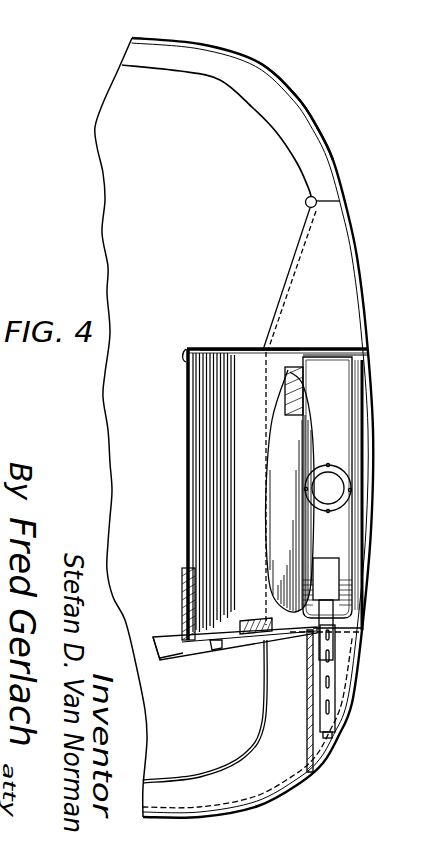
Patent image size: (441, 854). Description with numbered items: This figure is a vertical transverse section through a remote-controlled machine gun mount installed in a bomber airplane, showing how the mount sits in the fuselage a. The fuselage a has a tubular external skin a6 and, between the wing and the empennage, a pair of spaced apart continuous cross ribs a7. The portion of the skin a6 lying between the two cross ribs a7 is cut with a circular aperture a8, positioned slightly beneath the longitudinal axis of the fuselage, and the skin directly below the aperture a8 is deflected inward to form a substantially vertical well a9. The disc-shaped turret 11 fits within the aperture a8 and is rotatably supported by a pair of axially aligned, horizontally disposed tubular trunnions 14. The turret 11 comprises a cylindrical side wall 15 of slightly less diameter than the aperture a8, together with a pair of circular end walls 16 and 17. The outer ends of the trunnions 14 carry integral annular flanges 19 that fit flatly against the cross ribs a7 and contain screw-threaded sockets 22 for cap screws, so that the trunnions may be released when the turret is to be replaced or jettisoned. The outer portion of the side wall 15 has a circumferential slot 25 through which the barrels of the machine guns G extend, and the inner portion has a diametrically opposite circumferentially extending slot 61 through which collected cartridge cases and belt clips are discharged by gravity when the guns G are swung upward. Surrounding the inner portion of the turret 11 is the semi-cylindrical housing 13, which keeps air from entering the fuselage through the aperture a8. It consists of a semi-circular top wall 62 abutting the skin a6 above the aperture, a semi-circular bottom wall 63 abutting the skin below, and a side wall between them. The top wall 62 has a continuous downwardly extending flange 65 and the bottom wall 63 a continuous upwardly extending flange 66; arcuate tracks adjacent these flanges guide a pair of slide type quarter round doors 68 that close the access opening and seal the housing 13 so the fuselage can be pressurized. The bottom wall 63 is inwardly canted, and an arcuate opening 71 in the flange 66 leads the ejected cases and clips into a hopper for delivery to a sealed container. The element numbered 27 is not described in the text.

The fuselage a is at (301, 91).
The tubular external skin a6 is at (322, 145).
The cross ribs a7 is at (313, 197).
The circular aperture a8 is at (340, 626).
The vertical well a9 is at (345, 680).
The machine guns G is at (336, 718).
The turret 11 is at (380, 536).
The housing 13 is at (177, 454).
The tubular trunnions 14 is at (352, 489).
The cylindrical side wall 15 is at (337, 358).
The circular end wall 16 is at (364, 378).
The circular end wall 17 is at (266, 483).
The annular flanges 19 is at (336, 502).
The screw-threaded sockets 22 is at (330, 512).
The circumferential slot 25 is at (340, 594).
The side wall 27 is at (375, 458).
The circumferentially extending slot 61 is at (292, 367).
The semi-circular top wall 62 is at (226, 349).
The semi-circular bottom wall 63 is at (246, 636).
The downwardly extending flange 65 is at (185, 355).
The upwardly extending flange 66 is at (183, 580).
The slide type quarter round doors 68 is at (189, 480).
The arcuate opening 71 is at (216, 638).